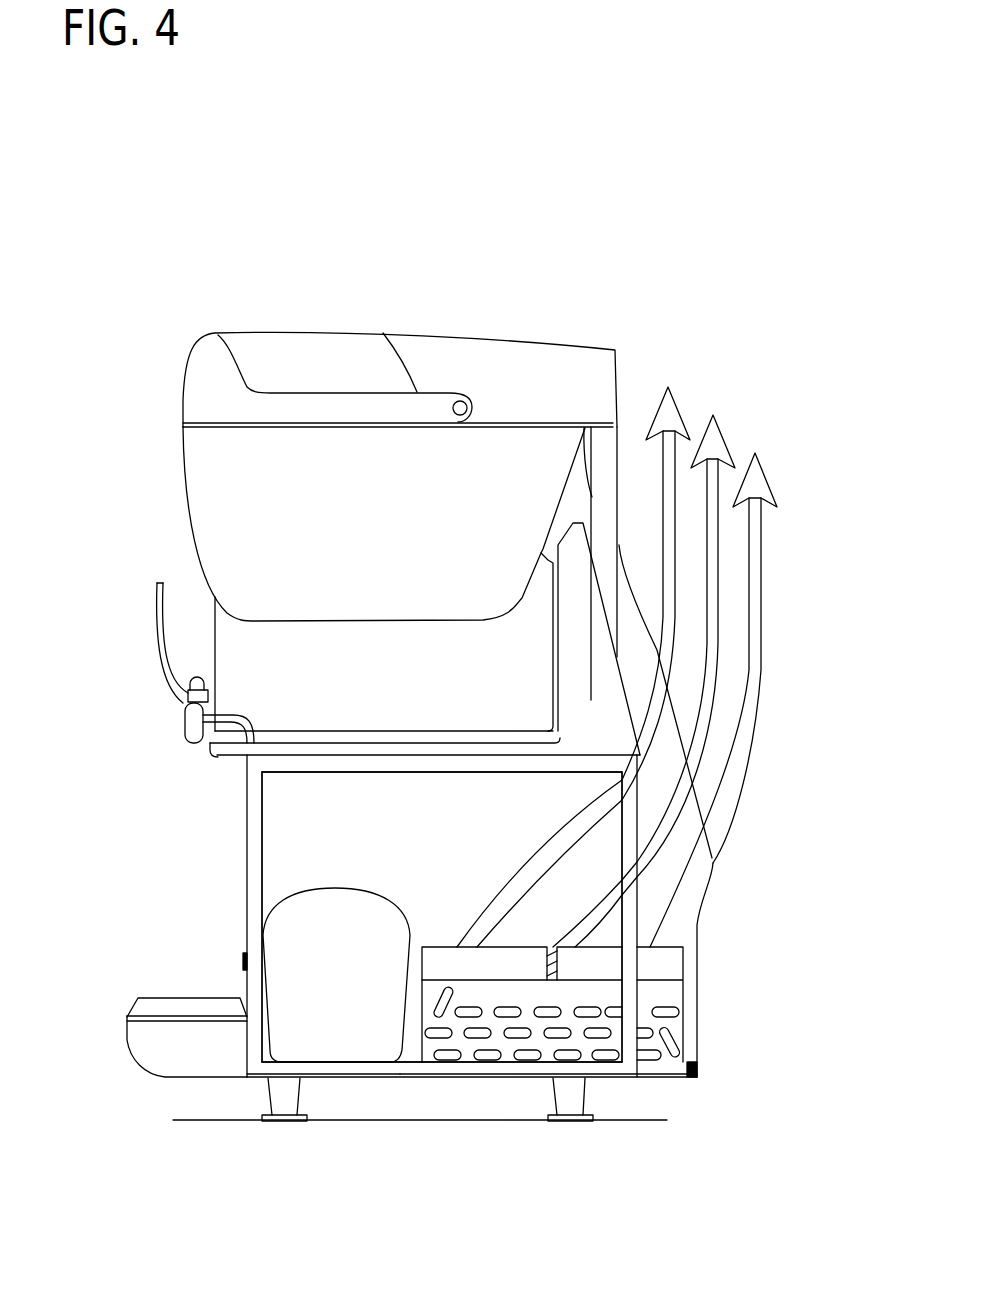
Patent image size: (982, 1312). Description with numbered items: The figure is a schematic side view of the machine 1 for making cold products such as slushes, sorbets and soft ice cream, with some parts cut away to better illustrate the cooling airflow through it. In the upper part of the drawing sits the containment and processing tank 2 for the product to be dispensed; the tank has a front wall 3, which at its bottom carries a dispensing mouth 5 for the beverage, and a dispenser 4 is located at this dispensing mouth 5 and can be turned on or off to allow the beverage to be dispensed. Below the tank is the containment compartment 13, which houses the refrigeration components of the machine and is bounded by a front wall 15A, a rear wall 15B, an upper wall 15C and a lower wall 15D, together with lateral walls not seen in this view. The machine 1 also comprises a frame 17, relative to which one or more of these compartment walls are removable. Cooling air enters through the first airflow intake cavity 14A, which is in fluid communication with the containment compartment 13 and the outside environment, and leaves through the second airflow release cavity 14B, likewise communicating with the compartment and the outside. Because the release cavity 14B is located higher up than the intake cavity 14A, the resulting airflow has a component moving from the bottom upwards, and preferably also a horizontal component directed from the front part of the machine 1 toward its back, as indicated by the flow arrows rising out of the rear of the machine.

The machine 1 is at (705, 363).
The containment and processing tank 2 is at (175, 450).
The front wall 3 is at (182, 512).
The dispenser 4 is at (150, 640).
The dispensing mouth 5 is at (237, 730).
The containment compartment 13 is at (432, 835).
The first airflow intake cavity 14A is at (345, 1080).
The second airflow release cavity 14B is at (705, 792).
The front wall 15A is at (243, 888).
The rear wall 15B is at (718, 905).
The upper wall 15C is at (325, 783).
The lower wall 15D is at (408, 1080).
The frame 17 is at (242, 964).